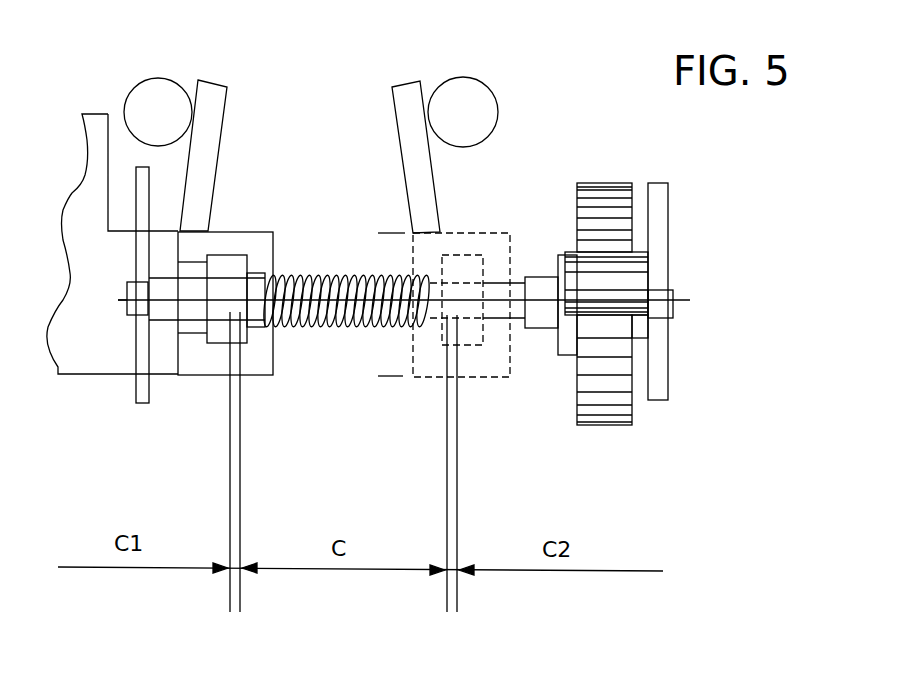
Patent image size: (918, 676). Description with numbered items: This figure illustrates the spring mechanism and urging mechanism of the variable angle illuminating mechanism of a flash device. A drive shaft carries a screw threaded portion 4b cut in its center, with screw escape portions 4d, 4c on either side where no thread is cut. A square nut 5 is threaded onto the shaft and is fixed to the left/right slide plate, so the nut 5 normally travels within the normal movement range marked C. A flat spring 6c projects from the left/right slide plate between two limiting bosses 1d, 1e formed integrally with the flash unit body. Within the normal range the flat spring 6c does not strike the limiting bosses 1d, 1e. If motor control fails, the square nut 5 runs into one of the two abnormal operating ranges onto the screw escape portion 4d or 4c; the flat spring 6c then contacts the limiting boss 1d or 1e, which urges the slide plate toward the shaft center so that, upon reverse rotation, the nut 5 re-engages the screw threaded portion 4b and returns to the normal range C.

The limiting boss 1d is at (138, 93).
The limiting boss 1e is at (495, 103).
The flat spring 6c is at (217, 153).
The square nut 5 is at (235, 257).
The screw escape portion 4d is at (203, 370).
The screw threaded portion 4b is at (347, 327).
The screw escape portion 4c is at (532, 330).